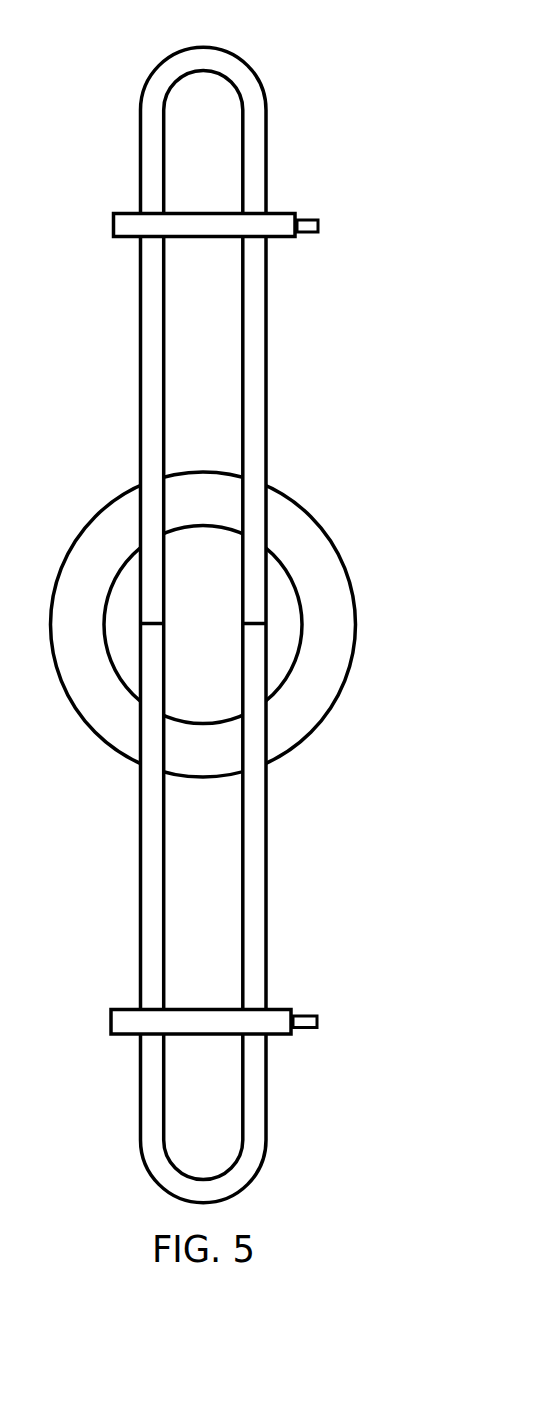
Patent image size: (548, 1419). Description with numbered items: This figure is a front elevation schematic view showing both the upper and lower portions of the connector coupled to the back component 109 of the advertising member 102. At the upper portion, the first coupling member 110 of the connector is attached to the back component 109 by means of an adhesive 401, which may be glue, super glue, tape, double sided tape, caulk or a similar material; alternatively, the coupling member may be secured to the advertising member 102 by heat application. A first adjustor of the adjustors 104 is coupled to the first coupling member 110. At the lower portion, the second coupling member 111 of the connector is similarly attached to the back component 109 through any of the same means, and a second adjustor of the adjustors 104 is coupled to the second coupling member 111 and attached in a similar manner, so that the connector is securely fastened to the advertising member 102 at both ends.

The advertising member 102 is at (227, 625).
The adjustors 104 is at (112, 229).
The back component 109 is at (118, 494).
The first coupling member 110 is at (139, 129).
The second coupling member 111 is at (267, 1150).
The adhesive 401 is at (295, 663).